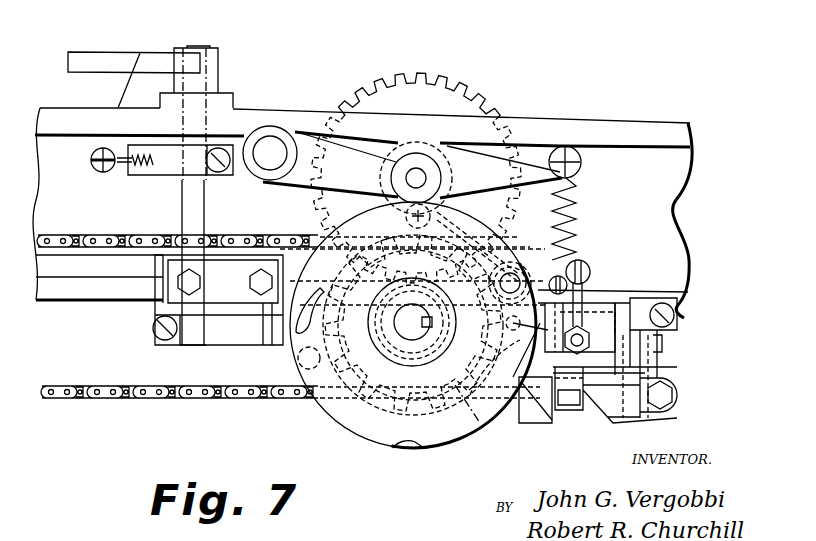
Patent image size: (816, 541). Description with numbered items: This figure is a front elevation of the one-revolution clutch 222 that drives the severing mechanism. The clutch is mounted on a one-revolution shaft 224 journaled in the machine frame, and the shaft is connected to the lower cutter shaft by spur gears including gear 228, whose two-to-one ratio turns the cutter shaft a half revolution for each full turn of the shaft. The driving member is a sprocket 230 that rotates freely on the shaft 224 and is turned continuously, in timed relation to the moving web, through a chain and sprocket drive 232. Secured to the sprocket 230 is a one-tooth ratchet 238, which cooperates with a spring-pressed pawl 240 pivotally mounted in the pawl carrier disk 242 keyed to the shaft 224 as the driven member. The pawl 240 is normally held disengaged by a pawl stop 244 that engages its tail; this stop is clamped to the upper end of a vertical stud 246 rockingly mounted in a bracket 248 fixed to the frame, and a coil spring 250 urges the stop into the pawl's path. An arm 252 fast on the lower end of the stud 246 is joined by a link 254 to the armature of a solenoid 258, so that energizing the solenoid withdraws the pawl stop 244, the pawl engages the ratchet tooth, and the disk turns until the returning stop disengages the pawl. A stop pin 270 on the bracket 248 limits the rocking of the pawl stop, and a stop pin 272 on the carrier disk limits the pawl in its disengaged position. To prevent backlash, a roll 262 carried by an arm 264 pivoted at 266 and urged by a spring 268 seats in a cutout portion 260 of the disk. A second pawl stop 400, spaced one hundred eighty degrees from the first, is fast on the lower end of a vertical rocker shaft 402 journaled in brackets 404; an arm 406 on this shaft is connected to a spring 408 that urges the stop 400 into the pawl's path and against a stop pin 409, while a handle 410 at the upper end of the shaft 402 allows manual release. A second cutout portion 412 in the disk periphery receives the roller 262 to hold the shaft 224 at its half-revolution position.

The handle 410 is at (97, 52).
The brackets 404 is at (233, 96).
The vertical rocker shaft 402 is at (182, 208).
The arm 406 is at (155, 176).
The spring 408 is at (93, 158).
The pivot 266 is at (272, 130).
The arm 264 is at (366, 157).
The roll 262 is at (418, 162).
The spur gear 228 is at (463, 85).
The cutout portion 260 is at (402, 198).
The spring 268 is at (588, 180).
The pawl 240 is at (572, 237).
The coil spring 250 is at (580, 266).
The pawl stop 244 is at (594, 304).
The solenoid 258 is at (543, 377).
The vertical stud 246 is at (655, 343).
The bracket 248 is at (667, 362).
The arm 252 is at (681, 420).
The link 254 is at (616, 437).
The chain and sprocket drive 232 is at (75, 384).
The sprocket 230 is at (300, 233).
The second pawl stop 400 is at (238, 343).
The stop pin 409 is at (266, 332).
The one-revolution clutch 222 is at (320, 434).
The one-revolution shaft 224 is at (406, 340).
The second cutout portion 412 is at (413, 447).
The stop pin 272 is at (462, 425).
The one-tooth ratchet 238 is at (478, 400).
The stop pin 270 is at (505, 404).
The pawl carrier disk 242 is at (531, 388).